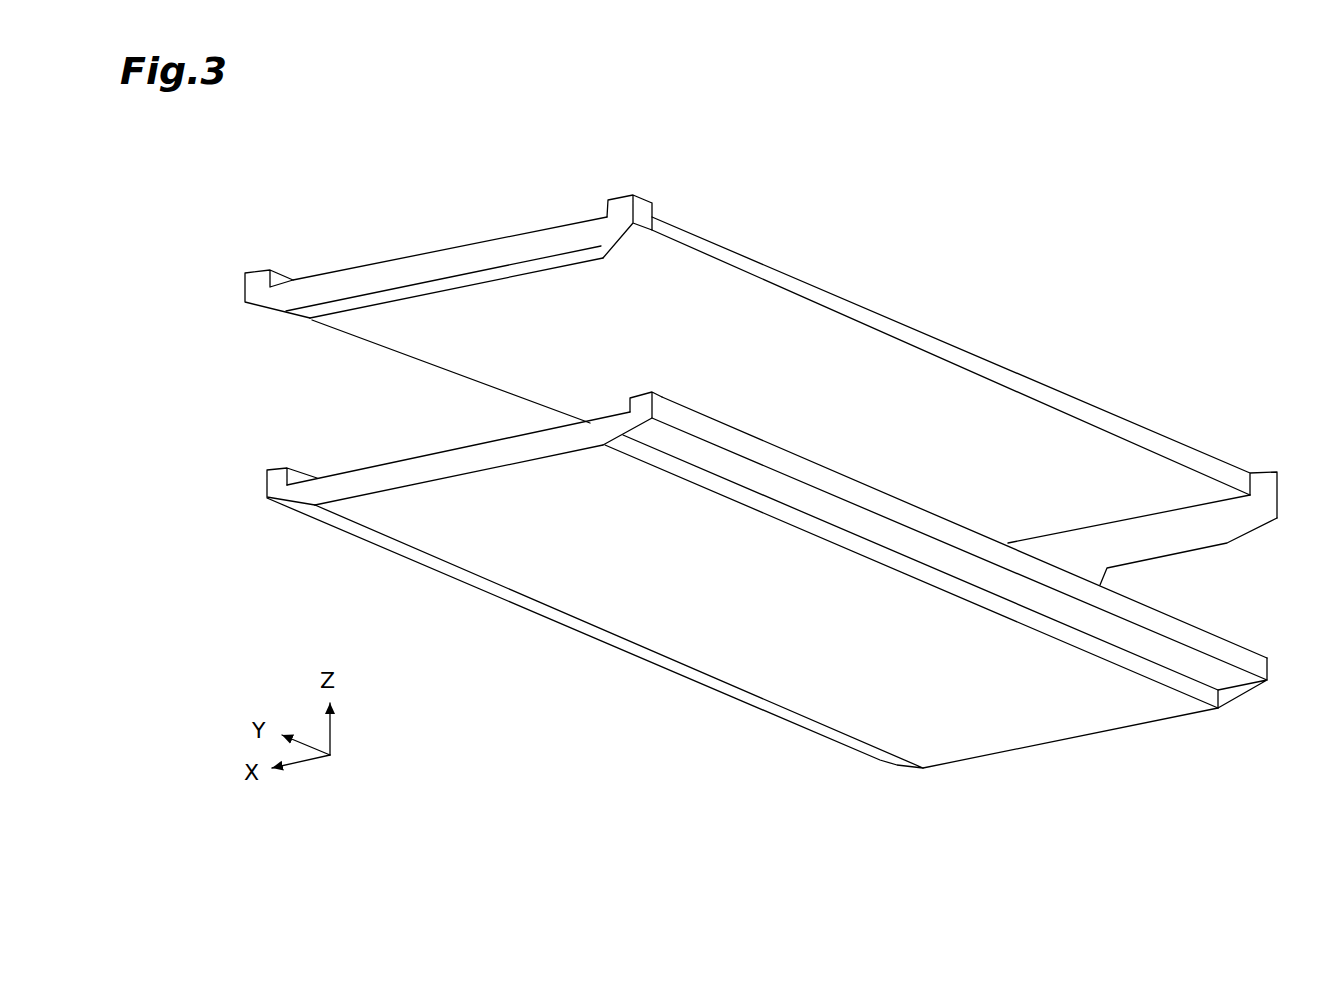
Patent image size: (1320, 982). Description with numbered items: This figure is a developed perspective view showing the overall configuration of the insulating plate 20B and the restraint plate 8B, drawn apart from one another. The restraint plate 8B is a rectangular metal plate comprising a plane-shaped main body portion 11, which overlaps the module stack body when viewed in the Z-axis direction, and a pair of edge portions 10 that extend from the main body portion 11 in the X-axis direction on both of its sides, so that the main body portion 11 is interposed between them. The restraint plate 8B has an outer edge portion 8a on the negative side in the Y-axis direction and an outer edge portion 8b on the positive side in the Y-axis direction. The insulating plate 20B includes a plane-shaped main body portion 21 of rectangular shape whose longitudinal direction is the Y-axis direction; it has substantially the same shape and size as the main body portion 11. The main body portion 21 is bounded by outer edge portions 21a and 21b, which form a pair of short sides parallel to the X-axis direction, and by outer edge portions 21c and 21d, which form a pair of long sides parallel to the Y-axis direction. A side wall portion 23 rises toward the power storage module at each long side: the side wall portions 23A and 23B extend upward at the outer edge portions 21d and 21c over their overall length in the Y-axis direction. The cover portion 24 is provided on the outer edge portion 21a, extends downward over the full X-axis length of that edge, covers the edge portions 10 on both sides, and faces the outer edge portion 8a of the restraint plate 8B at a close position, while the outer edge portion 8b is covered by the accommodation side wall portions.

The insulating plate 20B is at (915, 300).
The main body portion 21 is at (532, 340).
The outer edge portion 21a is at (1100, 537).
The outer edge portion 21b is at (517, 233).
The outer edge portion 21c is at (818, 306).
The outer edge portion 21d is at (383, 345).
The side wall portion 23 is at (397, 256).
The side wall portion 23A is at (288, 273).
The side wall portion 23B is at (688, 245).
The cover portion 24 is at (1237, 522).
The edge portion 10 is at (787, 722).
The main body portion 11 is at (967, 727).
The outer edge portion 8a is at (1102, 735).
The restraint plate 8B is at (658, 675).
The outer edge portion 8b is at (315, 490).